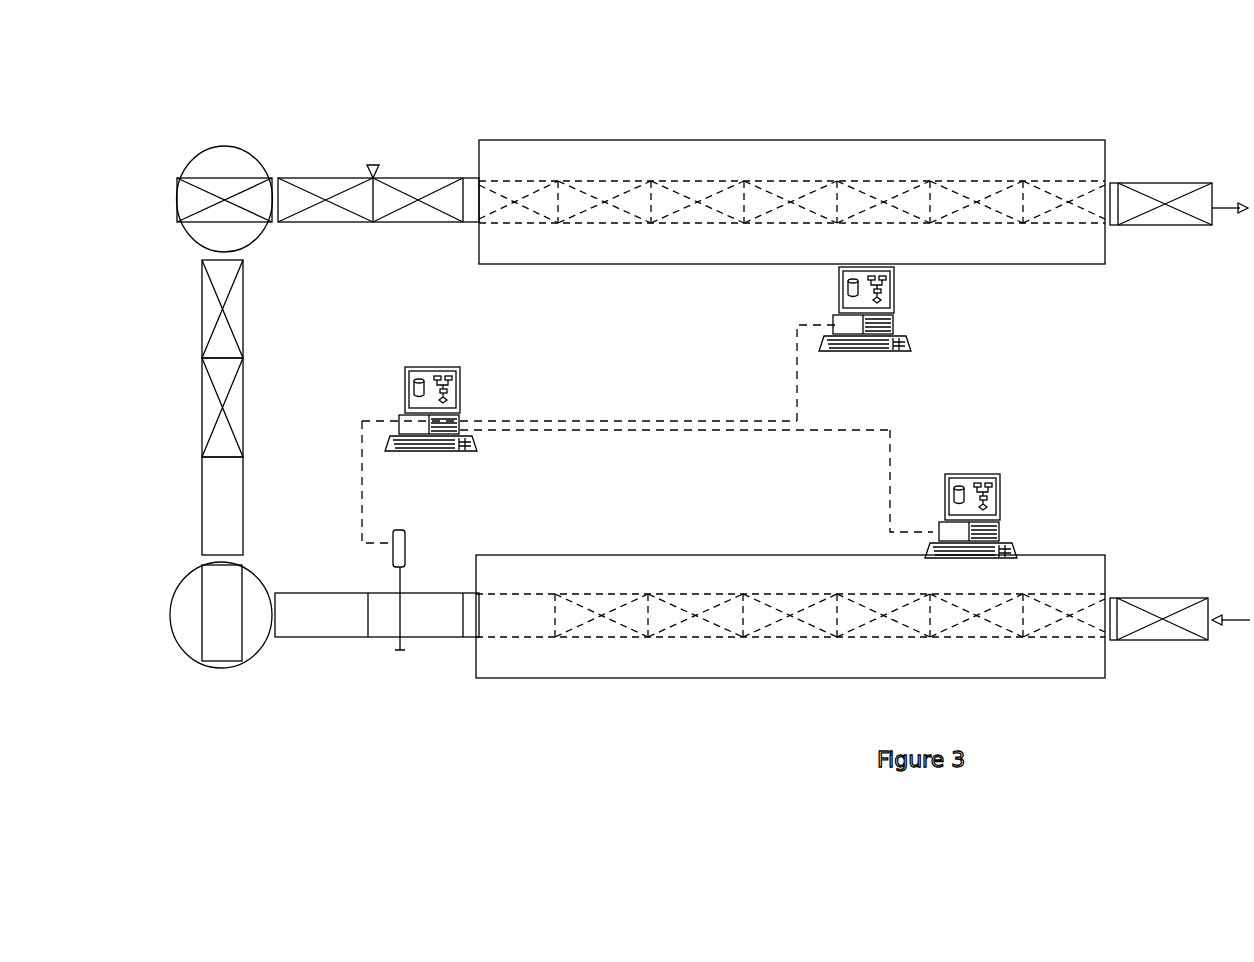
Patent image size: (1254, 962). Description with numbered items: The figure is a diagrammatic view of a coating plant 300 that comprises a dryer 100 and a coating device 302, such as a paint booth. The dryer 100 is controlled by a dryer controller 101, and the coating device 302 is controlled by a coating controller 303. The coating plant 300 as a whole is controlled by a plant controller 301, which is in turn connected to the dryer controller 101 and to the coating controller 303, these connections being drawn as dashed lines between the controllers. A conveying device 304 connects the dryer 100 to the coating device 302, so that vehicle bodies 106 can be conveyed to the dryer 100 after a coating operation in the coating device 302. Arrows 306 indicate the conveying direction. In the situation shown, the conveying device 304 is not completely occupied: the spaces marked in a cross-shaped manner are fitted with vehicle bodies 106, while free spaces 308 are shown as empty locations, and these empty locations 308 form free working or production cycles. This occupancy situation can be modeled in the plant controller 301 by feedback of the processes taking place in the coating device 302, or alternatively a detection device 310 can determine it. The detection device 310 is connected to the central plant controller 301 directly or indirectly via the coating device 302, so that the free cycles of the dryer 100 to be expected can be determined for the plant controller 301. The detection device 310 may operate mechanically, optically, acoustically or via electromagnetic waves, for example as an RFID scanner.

The coating plant 300 is at (210, 76).
The vehicle bodies 106 is at (177, 190).
The conveying device 304 is at (372, 164).
The dryer 100 is at (530, 140).
The arrows 306 is at (1227, 202).
The free spaces 308 is at (202, 505).
The detection device 310 is at (400, 652).
The coating device 302 is at (509, 678).
The plant controller 301 is at (460, 400).
The dryer controller 101 is at (910, 340).
The coating controller 303 is at (993, 475).